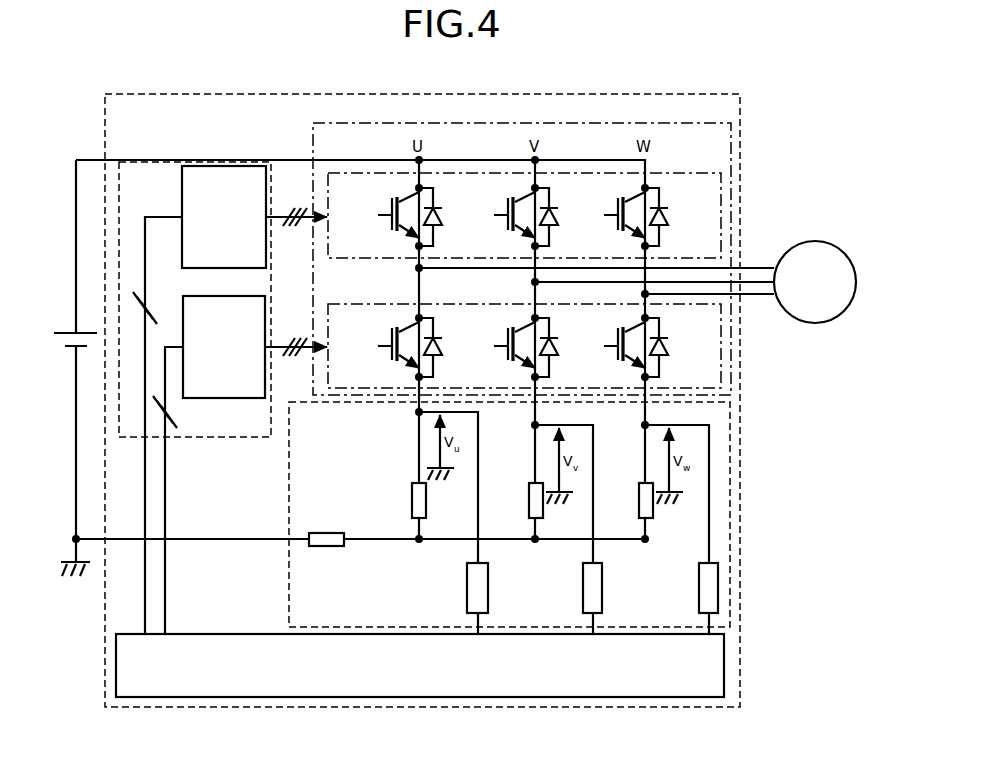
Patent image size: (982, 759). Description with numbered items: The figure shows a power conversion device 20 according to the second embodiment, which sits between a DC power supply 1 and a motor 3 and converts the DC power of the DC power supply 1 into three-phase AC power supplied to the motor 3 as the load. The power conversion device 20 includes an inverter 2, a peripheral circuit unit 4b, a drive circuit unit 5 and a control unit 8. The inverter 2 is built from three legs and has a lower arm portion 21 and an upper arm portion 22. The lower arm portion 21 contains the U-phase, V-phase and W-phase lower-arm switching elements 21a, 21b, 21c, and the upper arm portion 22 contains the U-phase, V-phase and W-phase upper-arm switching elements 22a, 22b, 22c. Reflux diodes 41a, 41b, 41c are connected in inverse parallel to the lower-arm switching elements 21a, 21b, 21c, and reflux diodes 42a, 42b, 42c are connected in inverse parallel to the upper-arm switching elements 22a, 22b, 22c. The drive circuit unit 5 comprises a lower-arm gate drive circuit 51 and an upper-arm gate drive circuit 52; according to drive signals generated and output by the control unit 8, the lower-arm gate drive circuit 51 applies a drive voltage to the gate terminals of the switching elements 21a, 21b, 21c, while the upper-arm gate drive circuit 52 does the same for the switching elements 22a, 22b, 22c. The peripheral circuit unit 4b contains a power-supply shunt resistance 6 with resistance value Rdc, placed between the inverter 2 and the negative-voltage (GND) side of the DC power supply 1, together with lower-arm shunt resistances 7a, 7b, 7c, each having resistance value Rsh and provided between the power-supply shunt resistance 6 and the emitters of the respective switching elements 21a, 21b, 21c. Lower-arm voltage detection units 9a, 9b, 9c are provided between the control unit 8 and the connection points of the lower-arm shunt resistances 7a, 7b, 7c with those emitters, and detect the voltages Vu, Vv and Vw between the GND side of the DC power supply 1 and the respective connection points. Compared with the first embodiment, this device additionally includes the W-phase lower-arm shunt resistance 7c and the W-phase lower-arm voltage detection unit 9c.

The DC power supply 1 is at (69, 330).
The inverter 2 is at (648, 124).
The motor 3 is at (789, 245).
The peripheral circuit unit 4b is at (289, 497).
The drive circuit unit 5 is at (118, 413).
The power-supply shunt resistance 6 is at (327, 533).
The lower-arm shunt resistance 7a is at (412, 483).
The lower-arm shunt resistance 7b is at (528, 483).
The lower-arm shunt resistance 7c is at (639, 483).
The control unit 8 is at (236, 634).
The lower-arm voltage detection unit 9a is at (467, 589).
The lower-arm voltage detection unit 9b is at (583, 589).
The lower-arm voltage detection unit 9c is at (699, 589).
The power conversion device 20 is at (742, 112).
The lower arm portion 21 is at (722, 343).
The switching element 21a is at (400, 333).
The switching element 21b is at (516, 333).
The switching element 21c is at (626, 333).
The upper arm portion 22 is at (681, 175).
The switching element 22a is at (400, 202).
The switching element 22b is at (516, 202).
The switching element 22c is at (626, 202).
The reflux diode 41a is at (442, 356).
The reflux diode 41b is at (558, 356).
The reflux diode 41c is at (668, 356).
The reflux diode 42a is at (442, 226).
The reflux diode 42b is at (558, 226).
The reflux diode 42c is at (668, 226).
The lower-arm gate drive circuit 51 is at (214, 398).
The upper-arm gate drive circuit 52 is at (181, 196).